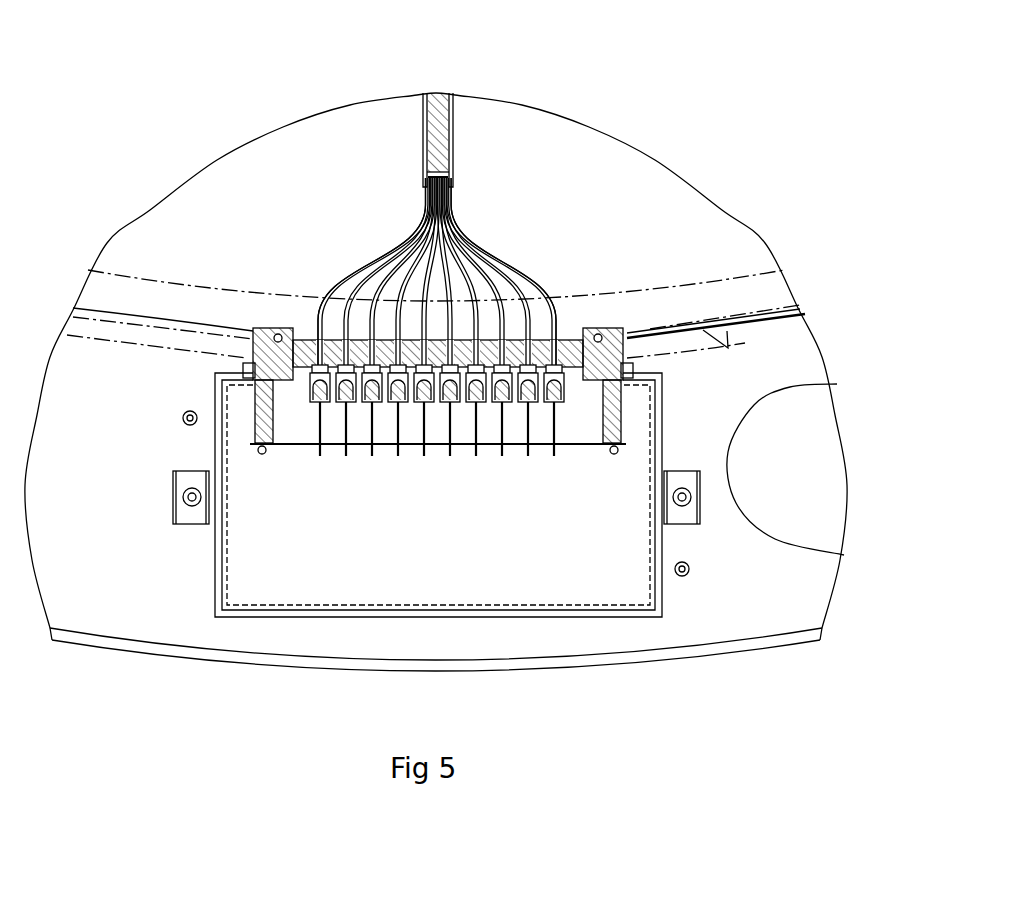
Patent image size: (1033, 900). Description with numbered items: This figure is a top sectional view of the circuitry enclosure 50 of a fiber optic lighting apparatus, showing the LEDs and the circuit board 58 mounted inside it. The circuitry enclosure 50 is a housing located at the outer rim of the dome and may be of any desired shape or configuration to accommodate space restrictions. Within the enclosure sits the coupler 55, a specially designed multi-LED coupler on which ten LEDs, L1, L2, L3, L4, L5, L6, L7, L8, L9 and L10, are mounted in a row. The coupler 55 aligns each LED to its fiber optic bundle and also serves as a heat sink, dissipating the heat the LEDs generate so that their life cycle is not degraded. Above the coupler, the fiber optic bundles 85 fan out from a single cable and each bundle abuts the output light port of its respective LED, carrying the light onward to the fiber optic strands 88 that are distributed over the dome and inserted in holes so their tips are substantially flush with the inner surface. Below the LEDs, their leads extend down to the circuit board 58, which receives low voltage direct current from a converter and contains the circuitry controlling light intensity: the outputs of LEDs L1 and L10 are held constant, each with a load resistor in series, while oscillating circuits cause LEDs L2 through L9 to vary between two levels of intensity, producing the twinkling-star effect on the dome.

The circuitry enclosure 50 is at (667, 593).
The coupler 55 is at (600, 352).
The circuit board 58 is at (297, 447).
The fiber optic bundles 85 is at (453, 148).
The fiber optic strands 88 is at (337, 280).
The LED L1 is at (317, 405).
The LED L2 is at (343, 405).
The LED L3 is at (369, 405).
The LED L4 is at (395, 405).
The LED L5 is at (421, 405).
The LED L6 is at (447, 405).
The LED L7 is at (473, 405).
The LED L8 is at (499, 405).
The LED L9 is at (525, 405).
The LED L10 is at (551, 405).